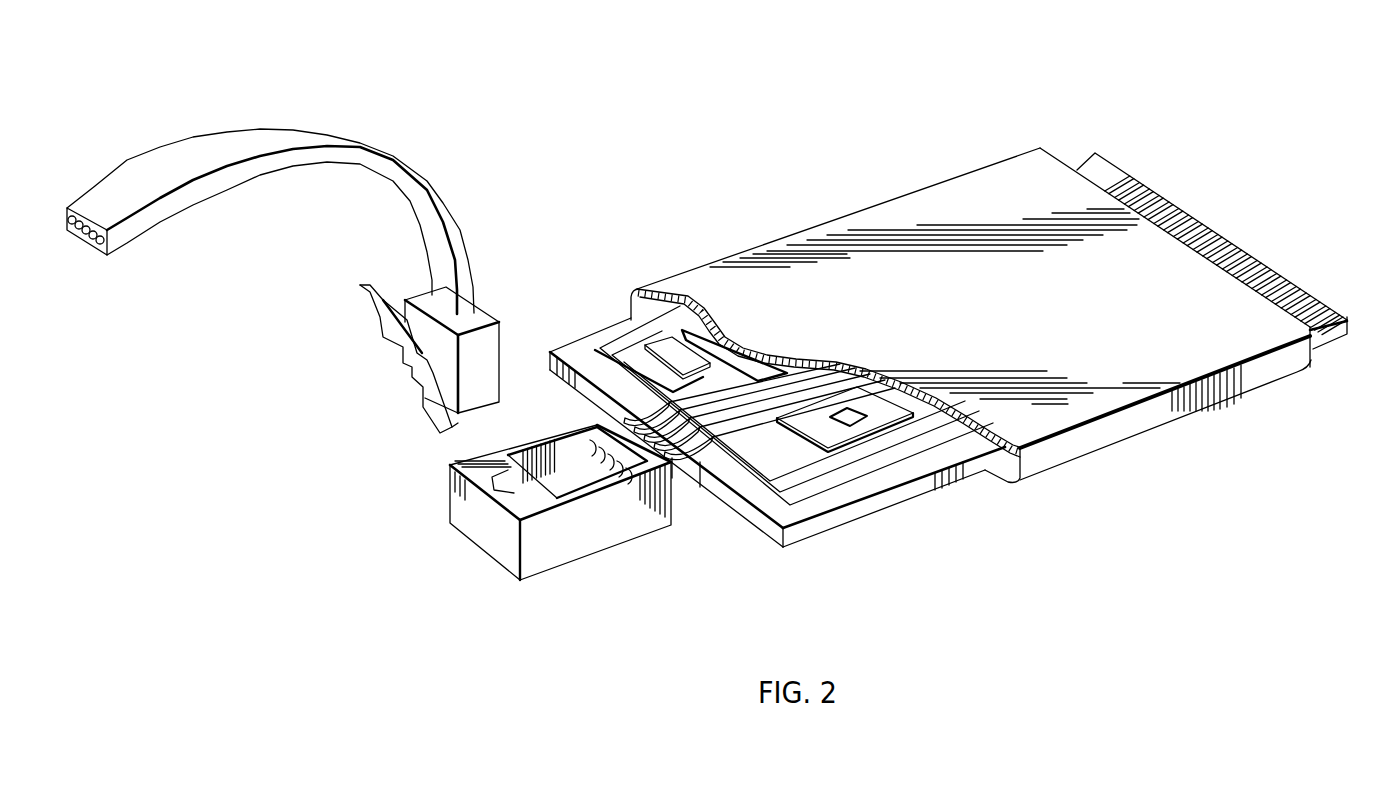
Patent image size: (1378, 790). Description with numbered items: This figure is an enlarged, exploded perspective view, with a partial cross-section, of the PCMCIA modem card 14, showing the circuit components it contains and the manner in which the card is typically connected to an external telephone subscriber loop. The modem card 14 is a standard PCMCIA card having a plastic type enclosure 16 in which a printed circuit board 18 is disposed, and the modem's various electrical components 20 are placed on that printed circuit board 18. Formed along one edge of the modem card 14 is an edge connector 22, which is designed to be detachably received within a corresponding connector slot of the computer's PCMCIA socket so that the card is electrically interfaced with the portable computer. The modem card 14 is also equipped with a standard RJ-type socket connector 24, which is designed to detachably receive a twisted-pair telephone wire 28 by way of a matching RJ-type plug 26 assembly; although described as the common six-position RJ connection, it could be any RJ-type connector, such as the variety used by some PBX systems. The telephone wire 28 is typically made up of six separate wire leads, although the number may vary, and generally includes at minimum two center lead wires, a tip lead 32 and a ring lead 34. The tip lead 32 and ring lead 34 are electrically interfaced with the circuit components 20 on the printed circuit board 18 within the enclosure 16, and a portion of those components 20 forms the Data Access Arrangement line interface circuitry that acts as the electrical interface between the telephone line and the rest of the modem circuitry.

The PCMCIA modem card 14 is at (1031, 341).
The enclosure 16 is at (670, 295).
The printed circuit board 18 is at (583, 350).
The electrical components 20 is at (680, 356).
The edge connector 22 is at (1137, 182).
The RJ-11 socket connector 24 is at (557, 495).
The RJ-11 plug 26 is at (502, 326).
The twisted-pair telephone wire 28 is at (285, 135).
The tip lead 32 is at (72, 233).
The ring lead 34 is at (80, 240).